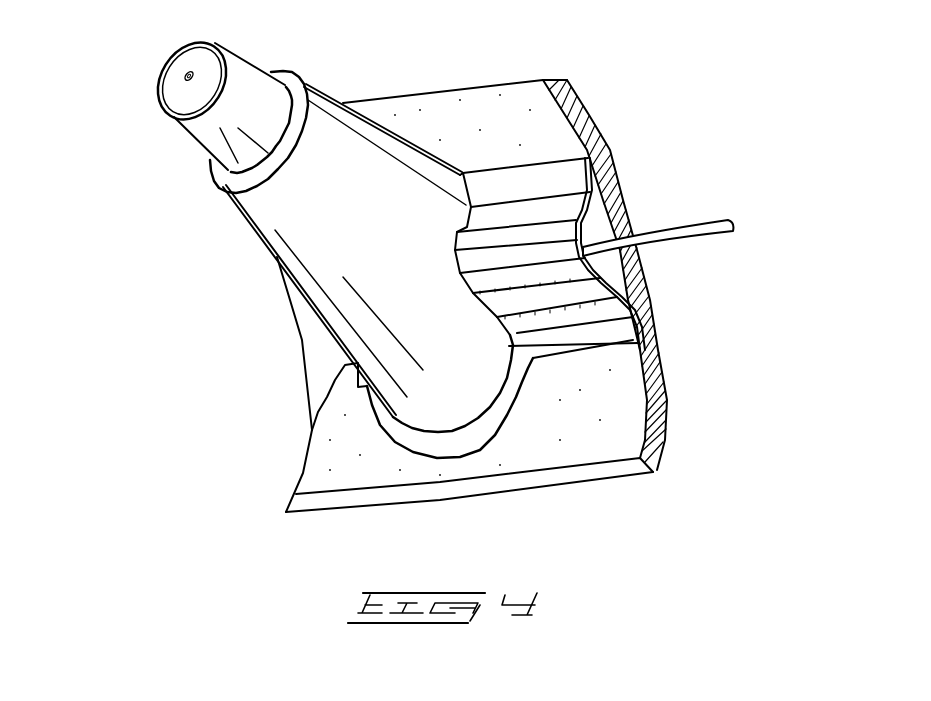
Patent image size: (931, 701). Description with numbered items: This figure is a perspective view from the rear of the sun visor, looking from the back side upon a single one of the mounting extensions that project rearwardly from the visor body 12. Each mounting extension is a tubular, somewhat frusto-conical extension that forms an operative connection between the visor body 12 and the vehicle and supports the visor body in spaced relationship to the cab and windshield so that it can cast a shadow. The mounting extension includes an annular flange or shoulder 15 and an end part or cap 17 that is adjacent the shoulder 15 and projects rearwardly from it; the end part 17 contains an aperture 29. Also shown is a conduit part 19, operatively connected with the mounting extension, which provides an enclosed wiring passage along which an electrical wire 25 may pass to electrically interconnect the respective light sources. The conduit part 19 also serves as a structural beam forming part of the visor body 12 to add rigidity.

The visor body 12 is at (494, 85).
The annular flange or shoulder 15 is at (290, 78).
The end part or cap 17 is at (220, 128).
The conduit part 19 is at (566, 222).
The electrical wire 25 is at (700, 233).
The aperture 29 is at (184, 75).